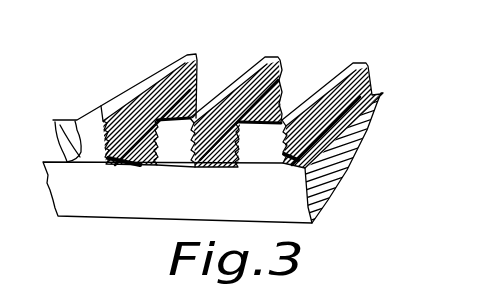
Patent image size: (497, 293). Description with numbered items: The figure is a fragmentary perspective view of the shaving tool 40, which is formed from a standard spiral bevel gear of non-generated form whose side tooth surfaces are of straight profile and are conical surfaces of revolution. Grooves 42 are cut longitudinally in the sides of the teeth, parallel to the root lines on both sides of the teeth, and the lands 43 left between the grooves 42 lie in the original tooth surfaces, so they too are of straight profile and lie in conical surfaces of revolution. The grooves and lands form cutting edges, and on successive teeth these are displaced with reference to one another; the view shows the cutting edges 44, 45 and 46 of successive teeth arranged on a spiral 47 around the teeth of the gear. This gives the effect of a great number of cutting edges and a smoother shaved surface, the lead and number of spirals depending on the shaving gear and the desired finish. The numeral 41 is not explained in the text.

The tool 40 is at (167, 224).
The ribs 41 is at (275, 58).
The grooves 42 is at (108, 160).
The lands 43 is at (109, 92).
The cutting edge 44 is at (107, 165).
The cutting edge 45 is at (197, 163).
The cutting edge 46 is at (277, 155).
The spiral 47 is at (247, 160).